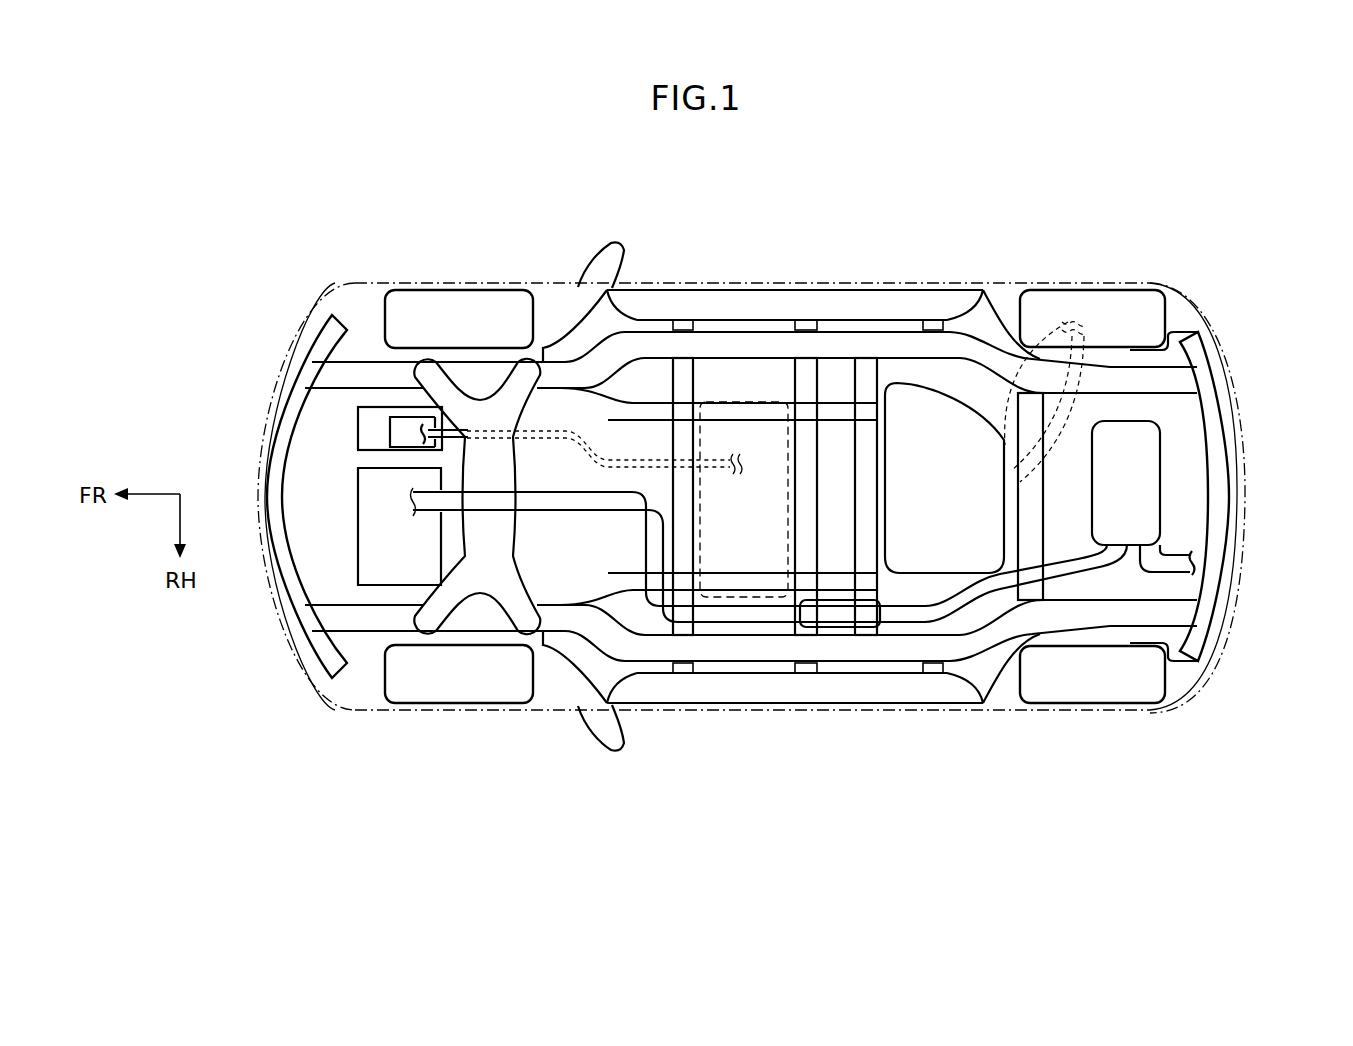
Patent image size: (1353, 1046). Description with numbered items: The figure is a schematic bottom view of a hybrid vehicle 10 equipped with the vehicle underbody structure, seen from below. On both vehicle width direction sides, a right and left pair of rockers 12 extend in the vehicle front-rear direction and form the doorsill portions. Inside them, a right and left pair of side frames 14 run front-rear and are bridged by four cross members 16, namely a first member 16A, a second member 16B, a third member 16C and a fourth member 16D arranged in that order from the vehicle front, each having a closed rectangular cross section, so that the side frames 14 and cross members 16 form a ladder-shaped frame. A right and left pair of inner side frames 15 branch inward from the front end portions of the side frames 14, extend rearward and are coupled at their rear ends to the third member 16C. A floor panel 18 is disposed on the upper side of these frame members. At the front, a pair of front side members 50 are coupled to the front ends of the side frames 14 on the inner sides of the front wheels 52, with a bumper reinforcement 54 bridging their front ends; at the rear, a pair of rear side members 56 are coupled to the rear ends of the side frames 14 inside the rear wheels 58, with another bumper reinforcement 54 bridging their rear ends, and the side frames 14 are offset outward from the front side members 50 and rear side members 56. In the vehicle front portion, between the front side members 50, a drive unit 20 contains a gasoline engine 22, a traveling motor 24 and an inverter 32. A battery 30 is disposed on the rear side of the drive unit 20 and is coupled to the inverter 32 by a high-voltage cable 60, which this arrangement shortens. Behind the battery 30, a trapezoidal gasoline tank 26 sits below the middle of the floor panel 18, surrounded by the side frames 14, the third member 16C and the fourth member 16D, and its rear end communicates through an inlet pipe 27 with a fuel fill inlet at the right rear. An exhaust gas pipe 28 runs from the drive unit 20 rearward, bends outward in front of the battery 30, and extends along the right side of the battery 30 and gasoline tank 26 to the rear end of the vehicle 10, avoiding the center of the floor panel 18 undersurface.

The vehicle 10 is at (347, 750).
The rockers 12 is at (870, 290).
The side frames 14 is at (633, 333).
The inner side frames 15 is at (636, 408).
The cross members 16 is at (770, 187).
The first member 16A is at (683, 380).
The second member 16B is at (808, 383).
The third member 16C is at (868, 380).
The fourth member 16D is at (1025, 412).
The floor panel 18 is at (593, 322).
The drive unit 20 is at (322, 450).
The gasoline engine 22 is at (370, 552).
The traveling motor 24 is at (367, 430).
The gasoline tank 26 is at (1018, 473).
The inlet pipe 27 is at (1147, 281).
The exhaust gas pipe 28 is at (933, 627).
The battery 30 is at (738, 640).
The inverter 32 is at (323, 352).
The front side members 50 is at (388, 372).
The front wheels 52 is at (458, 300).
The bumper reinforcement 54 is at (268, 468).
The rear side members 56 is at (1160, 373).
The rear wheels 58 is at (1100, 290).
The high-voltage cable 60 is at (527, 438).